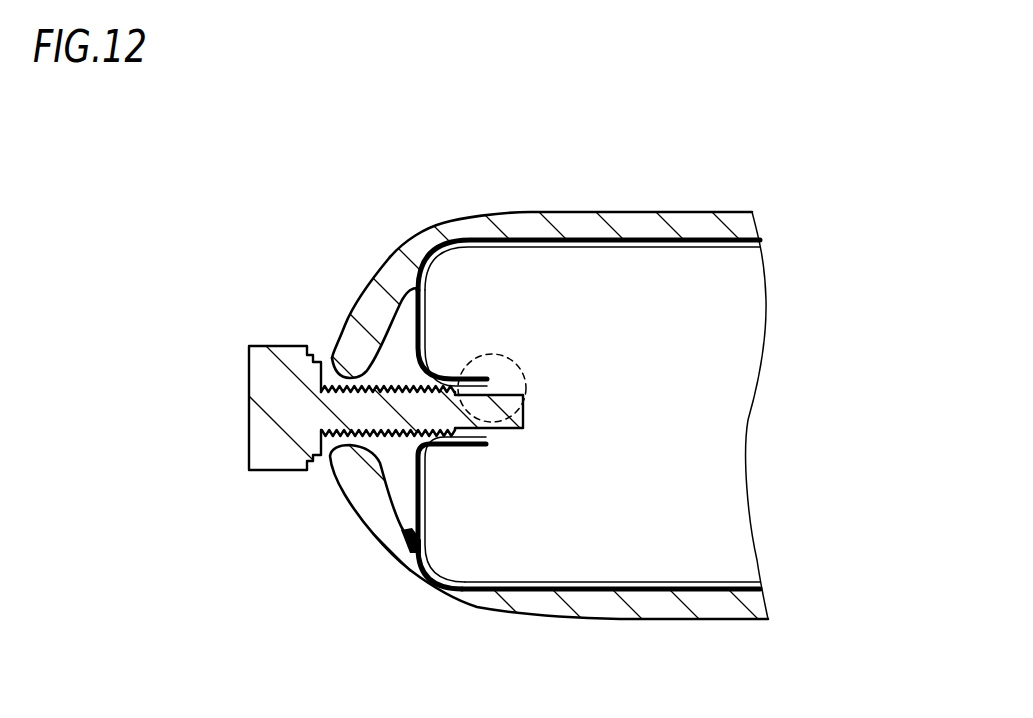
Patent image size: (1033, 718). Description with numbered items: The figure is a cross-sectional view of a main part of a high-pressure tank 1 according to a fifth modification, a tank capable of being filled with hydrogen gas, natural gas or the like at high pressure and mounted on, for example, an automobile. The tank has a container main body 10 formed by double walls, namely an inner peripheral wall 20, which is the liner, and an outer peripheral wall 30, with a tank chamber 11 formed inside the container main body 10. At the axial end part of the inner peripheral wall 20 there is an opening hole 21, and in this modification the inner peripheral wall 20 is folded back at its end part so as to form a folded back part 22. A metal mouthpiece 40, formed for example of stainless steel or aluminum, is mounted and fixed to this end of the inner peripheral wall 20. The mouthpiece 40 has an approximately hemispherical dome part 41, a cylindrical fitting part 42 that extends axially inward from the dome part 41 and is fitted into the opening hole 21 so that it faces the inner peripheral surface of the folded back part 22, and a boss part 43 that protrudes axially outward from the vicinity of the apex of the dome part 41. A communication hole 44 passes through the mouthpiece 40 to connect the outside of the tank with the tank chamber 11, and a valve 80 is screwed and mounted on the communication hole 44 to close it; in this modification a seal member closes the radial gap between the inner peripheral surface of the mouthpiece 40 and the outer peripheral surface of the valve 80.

The high-pressure tank 1 is at (848, 236).
The container main body 10 is at (768, 652).
The tank chamber 11 is at (648, 563).
The inner peripheral wall 20 is at (736, 245).
The opening hole 21 is at (492, 440).
The folded back part 22 is at (455, 448).
The outer peripheral wall 30 is at (573, 223).
The mouthpiece 40 is at (400, 313).
The dome part 41 is at (400, 503).
The fitting part 42 is at (505, 433).
The boss part 43 is at (337, 367).
The communication hole 44 is at (345, 417).
The valve 80 is at (273, 364).